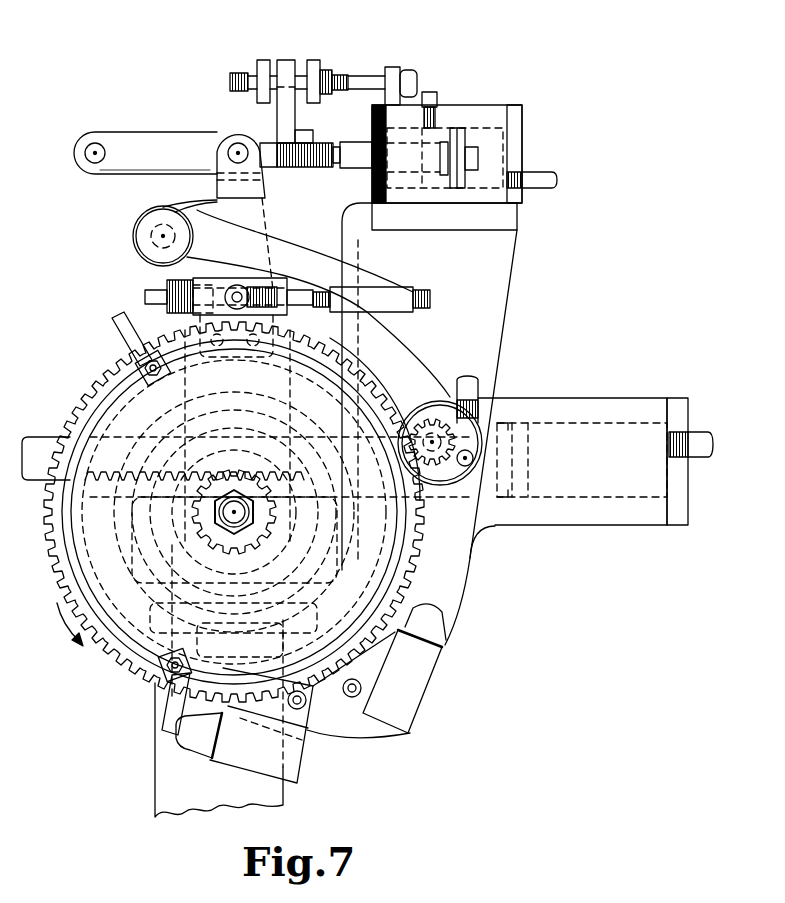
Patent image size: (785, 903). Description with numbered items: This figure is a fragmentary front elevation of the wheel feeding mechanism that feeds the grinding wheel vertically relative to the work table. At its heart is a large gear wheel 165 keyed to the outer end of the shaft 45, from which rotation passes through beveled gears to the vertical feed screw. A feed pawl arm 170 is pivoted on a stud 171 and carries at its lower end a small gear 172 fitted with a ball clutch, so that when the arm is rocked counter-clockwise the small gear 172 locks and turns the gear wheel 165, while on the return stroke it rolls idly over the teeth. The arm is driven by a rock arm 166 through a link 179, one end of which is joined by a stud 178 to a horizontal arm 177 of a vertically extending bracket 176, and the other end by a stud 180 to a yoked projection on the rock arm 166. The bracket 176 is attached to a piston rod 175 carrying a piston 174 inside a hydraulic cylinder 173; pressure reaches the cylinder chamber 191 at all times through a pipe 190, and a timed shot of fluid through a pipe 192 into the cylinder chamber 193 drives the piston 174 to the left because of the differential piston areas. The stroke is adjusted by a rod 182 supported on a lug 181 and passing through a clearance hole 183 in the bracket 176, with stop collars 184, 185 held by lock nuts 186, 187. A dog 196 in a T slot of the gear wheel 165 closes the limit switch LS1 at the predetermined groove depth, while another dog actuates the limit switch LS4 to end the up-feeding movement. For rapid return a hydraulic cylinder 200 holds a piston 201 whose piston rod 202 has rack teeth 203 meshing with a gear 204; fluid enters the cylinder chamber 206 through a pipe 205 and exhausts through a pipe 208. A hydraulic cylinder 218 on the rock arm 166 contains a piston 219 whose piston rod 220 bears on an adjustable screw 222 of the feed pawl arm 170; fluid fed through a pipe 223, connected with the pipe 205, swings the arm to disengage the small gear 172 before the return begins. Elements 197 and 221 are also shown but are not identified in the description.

The shaft 45 is at (234, 530).
The gear wheel 165 is at (105, 372).
The rock arm 166 is at (202, 210).
The feed pawl arm 170 is at (293, 243).
The stud 171 is at (150, 230).
The small gear 172 is at (435, 405).
The hydraulic cylinder 173 is at (472, 128).
The piston 174 is at (452, 128).
The piston rod 175 is at (355, 142).
The bracket 176 is at (285, 135).
The arm 177 is at (150, 132).
The stud 178 is at (80, 147).
The link 179 is at (115, 143).
The stud 180 is at (232, 147).
The lug 181 is at (392, 67).
The rod 182 is at (355, 76).
The clearance hole 183 is at (287, 60).
The stop collar 184 is at (268, 62).
The stop collar 185 is at (320, 60).
The lock nut 186 is at (243, 75).
The lock nut 187 is at (327, 70).
The pipe 190 is at (430, 92).
The cylinder chamber 191 is at (432, 180).
The pipe 192 is at (532, 188).
The cylinder chamber 193 is at (500, 152).
The dog 196 is at (115, 320).
The shaft 197 is at (92, 410).
The hydraulic cylinder 200 is at (582, 422).
The piston 201 is at (525, 497).
The piston rod 202 is at (378, 392).
The rack teeth 203 is at (236, 490).
The gear 204 is at (205, 533).
The pipe 205 is at (482, 385).
The cylinder chamber 206 is at (477, 527).
The pipe 208 is at (700, 432).
The hydraulic cylinder 218 is at (190, 280).
The piston 219 is at (180, 303).
The piston rod 220 is at (296, 302).
The roller 221 is at (255, 285).
The adjustable screw 222 is at (428, 298).
The pipe 223 is at (145, 297).
The limit switch LS1 is at (185, 742).
The limit switch LS4 is at (430, 620).